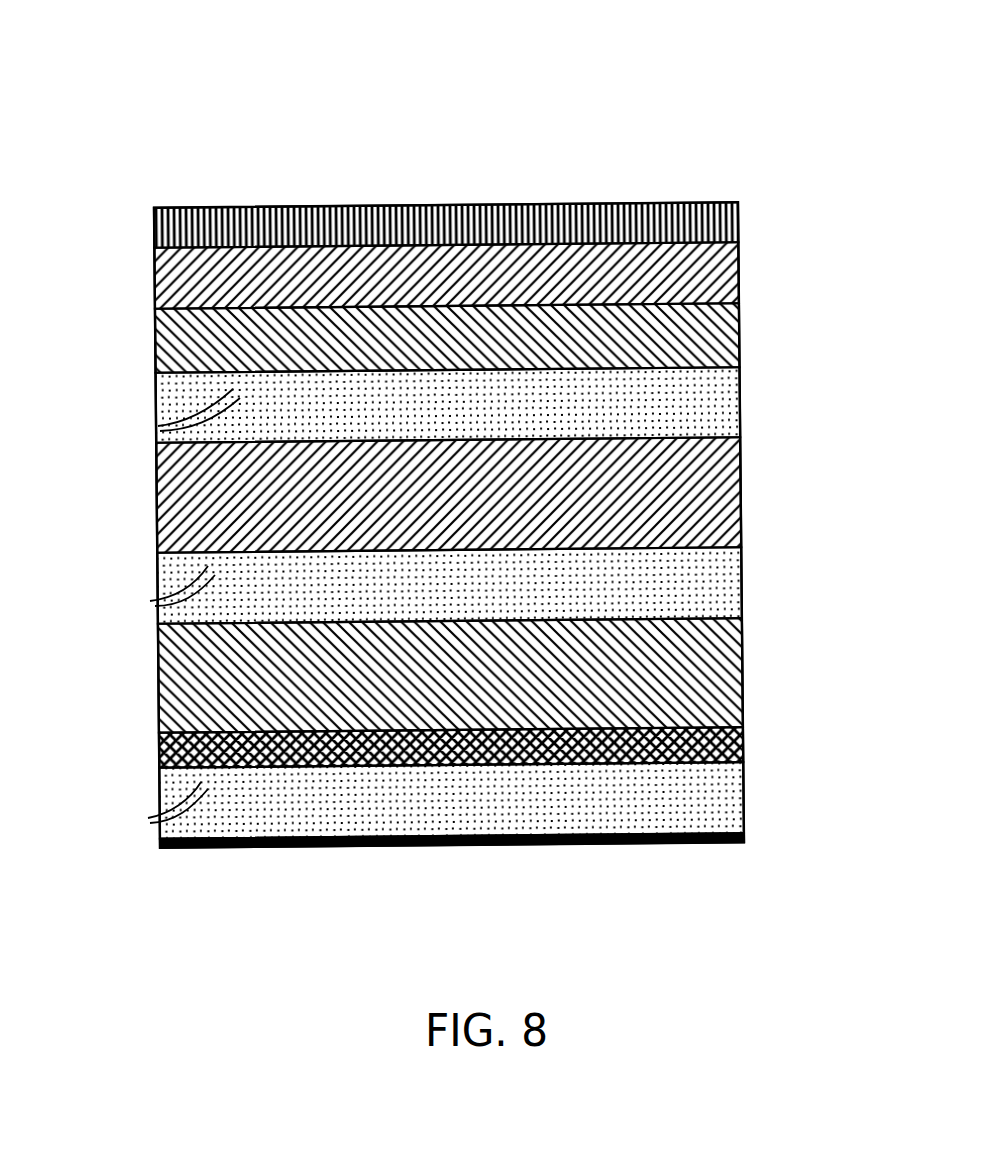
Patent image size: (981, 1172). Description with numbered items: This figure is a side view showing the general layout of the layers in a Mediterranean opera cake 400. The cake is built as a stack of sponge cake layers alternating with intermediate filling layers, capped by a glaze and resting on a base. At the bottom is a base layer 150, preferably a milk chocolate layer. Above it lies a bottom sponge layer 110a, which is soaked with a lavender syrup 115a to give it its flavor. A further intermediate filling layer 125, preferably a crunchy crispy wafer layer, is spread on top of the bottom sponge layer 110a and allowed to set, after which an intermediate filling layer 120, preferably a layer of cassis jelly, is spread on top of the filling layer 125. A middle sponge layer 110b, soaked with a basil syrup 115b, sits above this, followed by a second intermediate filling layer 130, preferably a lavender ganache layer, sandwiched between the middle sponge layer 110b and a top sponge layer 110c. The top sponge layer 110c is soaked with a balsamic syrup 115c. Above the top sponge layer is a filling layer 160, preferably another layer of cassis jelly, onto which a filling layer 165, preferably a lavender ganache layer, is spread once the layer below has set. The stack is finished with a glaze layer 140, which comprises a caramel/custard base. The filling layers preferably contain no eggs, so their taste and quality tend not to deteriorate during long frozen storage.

The opera cake 400 is at (724, 133).
The glaze layer 140 is at (528, 215).
The filling layer 165 is at (730, 250).
The filling layer 160 is at (718, 334).
The top sponge layer 110c is at (730, 383).
The balsamic syrup 115c is at (237, 393).
The second intermediate filling layer 130 is at (733, 462).
The middle sponge layer 110b is at (727, 562).
The basil syrup 115b is at (212, 570).
The first intermediate filling layer 120 is at (728, 650).
The intermediate filling layer 125 is at (743, 748).
The bottom sponge layer 110a is at (728, 783).
The lavender syrup 115a is at (205, 785).
The base layer 150 is at (543, 843).